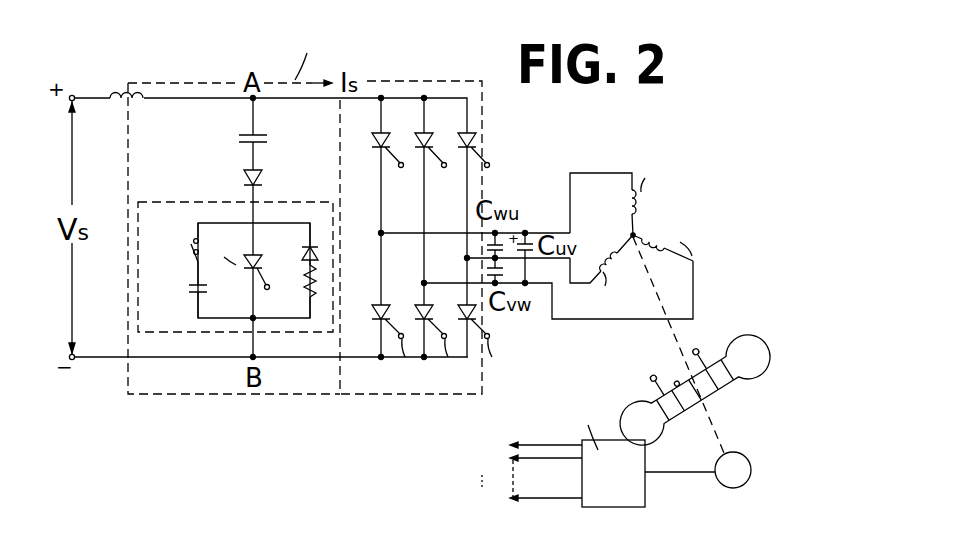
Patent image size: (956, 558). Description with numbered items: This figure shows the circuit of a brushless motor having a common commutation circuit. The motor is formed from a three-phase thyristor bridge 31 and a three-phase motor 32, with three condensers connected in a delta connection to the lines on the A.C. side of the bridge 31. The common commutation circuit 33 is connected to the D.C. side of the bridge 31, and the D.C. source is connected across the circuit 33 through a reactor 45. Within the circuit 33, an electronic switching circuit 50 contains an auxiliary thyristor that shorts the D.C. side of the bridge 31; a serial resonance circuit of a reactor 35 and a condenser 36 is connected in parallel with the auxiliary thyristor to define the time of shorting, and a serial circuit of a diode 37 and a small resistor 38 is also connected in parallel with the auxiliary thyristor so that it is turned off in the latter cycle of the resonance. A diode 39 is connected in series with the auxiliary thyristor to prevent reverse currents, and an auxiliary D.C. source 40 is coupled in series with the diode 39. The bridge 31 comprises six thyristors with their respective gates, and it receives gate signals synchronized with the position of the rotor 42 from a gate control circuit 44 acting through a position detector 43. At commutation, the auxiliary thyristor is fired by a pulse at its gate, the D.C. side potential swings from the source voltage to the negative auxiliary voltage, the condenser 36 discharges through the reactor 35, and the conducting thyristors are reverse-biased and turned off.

The three-phase thyristor bridge 31 is at (424, 78).
The three-phase motor 32 is at (622, 170).
The common commutation circuit 33 is at (255, 197).
The reactor 35 is at (190, 250).
The condenser 36 is at (183, 303).
The diode 37 is at (300, 253).
The small resistor 38 is at (304, 286).
The diode 39 is at (264, 186).
The auxiliary D.C. source 40 is at (262, 133).
The rotor 42 is at (738, 346).
The position detector 43 is at (741, 456).
The gate control circuit 44 is at (625, 498).
The reactor 45 is at (120, 92).
The electronic switching circuit 50 is at (235, 260).